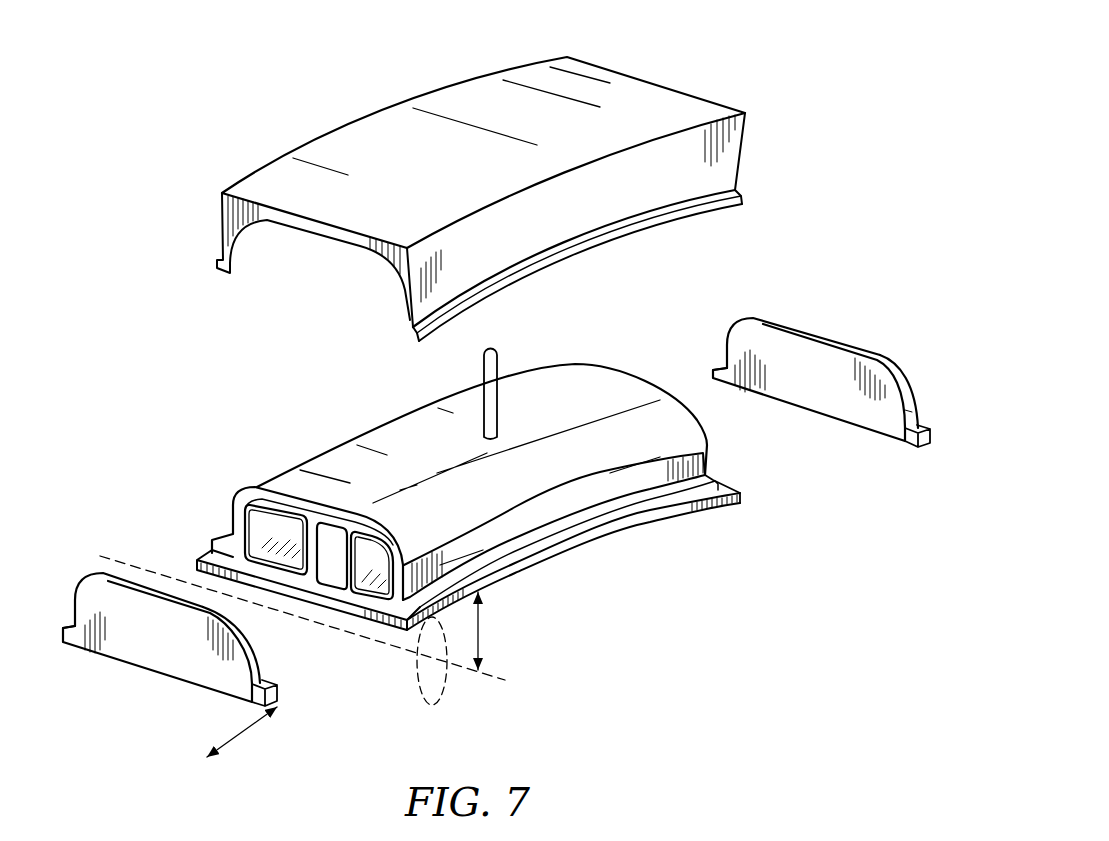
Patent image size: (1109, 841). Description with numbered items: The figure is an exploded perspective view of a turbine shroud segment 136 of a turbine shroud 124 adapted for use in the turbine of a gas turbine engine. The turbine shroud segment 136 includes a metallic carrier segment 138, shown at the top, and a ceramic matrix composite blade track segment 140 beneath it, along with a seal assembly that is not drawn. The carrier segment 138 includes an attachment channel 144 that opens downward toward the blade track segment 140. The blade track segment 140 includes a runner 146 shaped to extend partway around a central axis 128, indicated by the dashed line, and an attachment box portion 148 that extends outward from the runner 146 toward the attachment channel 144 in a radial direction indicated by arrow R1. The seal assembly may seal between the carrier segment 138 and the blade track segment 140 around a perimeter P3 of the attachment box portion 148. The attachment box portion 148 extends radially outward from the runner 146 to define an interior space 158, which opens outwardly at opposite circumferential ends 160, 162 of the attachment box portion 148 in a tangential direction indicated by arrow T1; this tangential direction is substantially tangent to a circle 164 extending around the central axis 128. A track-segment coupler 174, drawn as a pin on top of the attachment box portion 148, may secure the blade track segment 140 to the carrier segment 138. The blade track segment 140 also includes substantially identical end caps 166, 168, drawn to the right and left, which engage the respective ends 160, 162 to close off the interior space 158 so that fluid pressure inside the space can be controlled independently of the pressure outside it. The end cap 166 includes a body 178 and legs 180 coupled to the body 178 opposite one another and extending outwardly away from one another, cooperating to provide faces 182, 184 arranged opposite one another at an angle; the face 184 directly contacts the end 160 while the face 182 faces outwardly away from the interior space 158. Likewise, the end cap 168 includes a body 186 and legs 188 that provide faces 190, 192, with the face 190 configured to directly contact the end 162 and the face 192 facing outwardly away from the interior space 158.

The turbine shroud 124 is at (805, 30).
The turbine shroud segment 136 is at (708, 64).
The carrier segment 138 is at (575, 86).
The attachment channel 144 is at (268, 224).
The blade track segment 140 is at (607, 397).
The circumferential end 160 is at (668, 393).
The attachment box portion 148 is at (600, 478).
The perimeter P3 is at (630, 448).
The runner 146 is at (562, 542).
The track-segment coupler 174 is at (503, 358).
The interior space 158 is at (270, 526).
The circumferential end 162 is at (327, 585).
The circle 164 is at (417, 668).
The radial direction R1 is at (480, 630).
The central axis 128 is at (142, 560).
The end cap 166 is at (813, 326).
The body 178 is at (840, 374).
The face 182 is at (914, 380).
The face 184 is at (822, 393).
The legs 180 is at (717, 385).
The end cap 168 is at (143, 643).
The body 186 is at (198, 643).
The face 190 is at (177, 590).
The face 192 is at (173, 631).
The legs 188 is at (72, 620).
The tangential direction T1 is at (243, 730).